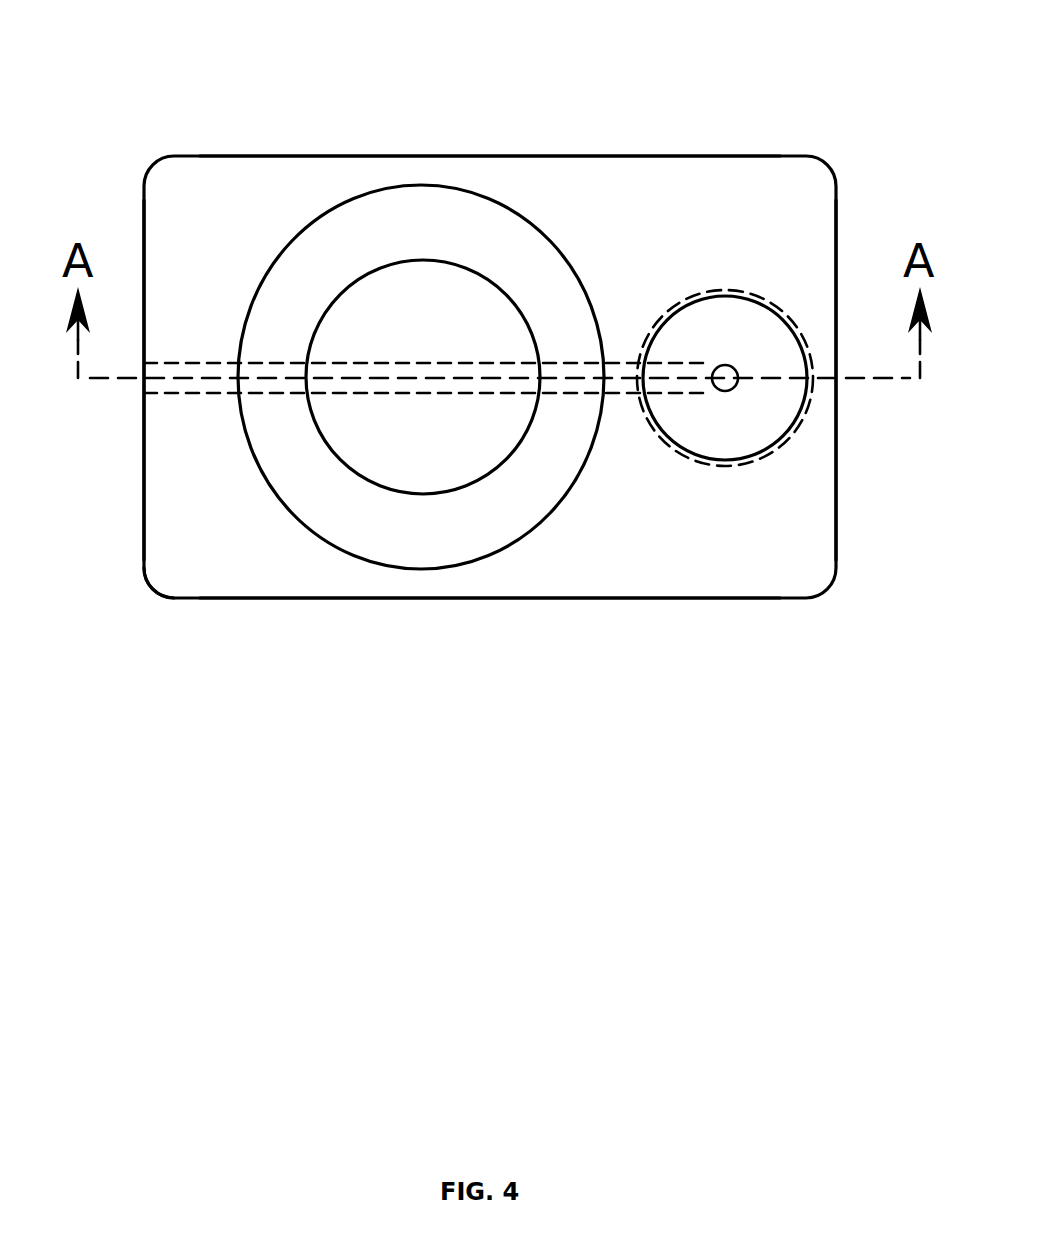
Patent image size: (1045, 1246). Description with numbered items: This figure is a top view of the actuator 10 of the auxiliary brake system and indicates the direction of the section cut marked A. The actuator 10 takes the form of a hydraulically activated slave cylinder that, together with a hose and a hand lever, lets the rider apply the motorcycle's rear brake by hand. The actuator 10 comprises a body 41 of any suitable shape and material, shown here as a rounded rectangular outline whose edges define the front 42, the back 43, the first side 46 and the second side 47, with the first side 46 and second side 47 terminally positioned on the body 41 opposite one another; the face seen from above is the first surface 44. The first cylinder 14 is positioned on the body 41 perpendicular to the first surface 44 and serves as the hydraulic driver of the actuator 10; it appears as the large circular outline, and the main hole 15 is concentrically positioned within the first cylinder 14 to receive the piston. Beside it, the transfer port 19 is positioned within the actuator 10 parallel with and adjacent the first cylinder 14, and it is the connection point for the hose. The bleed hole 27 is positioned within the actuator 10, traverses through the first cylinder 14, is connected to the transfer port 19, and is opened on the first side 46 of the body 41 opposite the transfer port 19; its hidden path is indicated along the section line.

The actuator 10 is at (535, 653).
The first cylinder 14 is at (505, 203).
The main hole 15 is at (357, 273).
The transfer port 19 is at (800, 412).
The bleed hole 27 is at (148, 385).
The body 41 is at (222, 580).
The front 42 is at (382, 597).
The back 43 is at (700, 156).
The first surface 44 is at (765, 565).
The first side 46 is at (147, 493).
The second side 47 is at (835, 513).